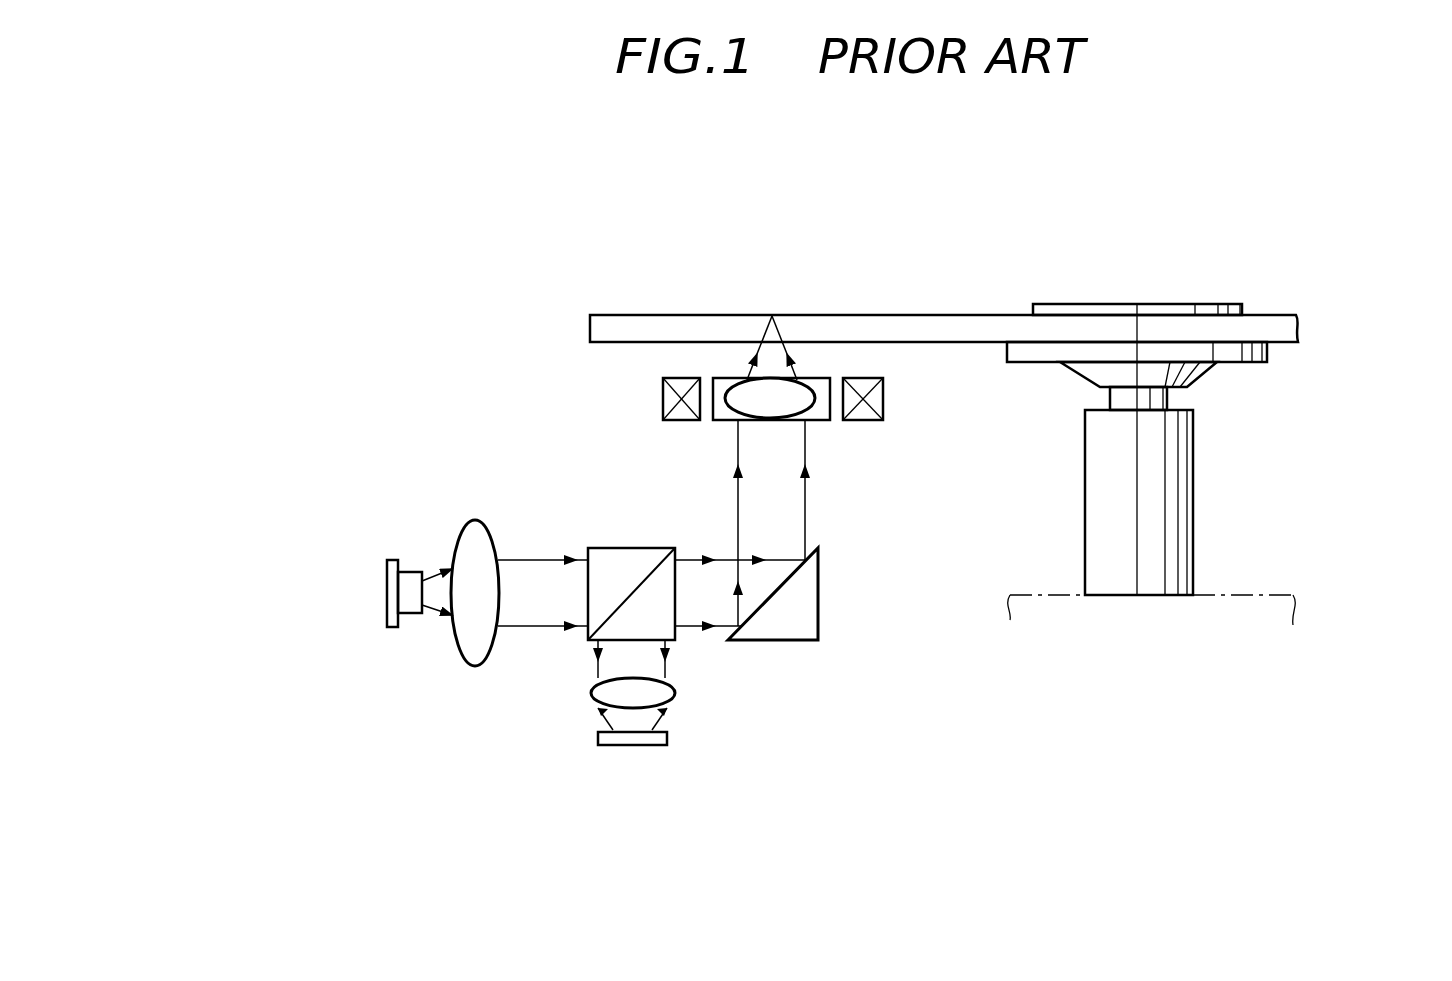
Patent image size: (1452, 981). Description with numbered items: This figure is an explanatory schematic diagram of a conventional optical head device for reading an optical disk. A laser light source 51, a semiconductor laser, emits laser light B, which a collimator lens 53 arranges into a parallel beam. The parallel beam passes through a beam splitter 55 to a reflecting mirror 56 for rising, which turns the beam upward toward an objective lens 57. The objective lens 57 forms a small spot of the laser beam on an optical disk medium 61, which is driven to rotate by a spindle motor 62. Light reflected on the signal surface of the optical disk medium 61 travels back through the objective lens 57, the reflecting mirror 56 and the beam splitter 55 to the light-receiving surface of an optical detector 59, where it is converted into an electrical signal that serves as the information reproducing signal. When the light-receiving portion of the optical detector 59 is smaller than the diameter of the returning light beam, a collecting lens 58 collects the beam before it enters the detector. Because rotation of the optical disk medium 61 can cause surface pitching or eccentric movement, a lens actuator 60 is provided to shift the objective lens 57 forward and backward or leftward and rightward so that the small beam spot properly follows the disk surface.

The laser light source 51 is at (387, 597).
The collimator lens 53 is at (460, 525).
The beam splitter 55 is at (597, 548).
The reflecting mirror for rising 56 is at (816, 630).
The objective lens 57 is at (810, 385).
The collecting lens 58 is at (674, 696).
The optical detector 59 is at (633, 746).
The lens actuator 60 is at (896, 445).
The optical disk medium 61 is at (623, 315).
The spindle motor 62 is at (1193, 513).
The laser light B is at (430, 610).